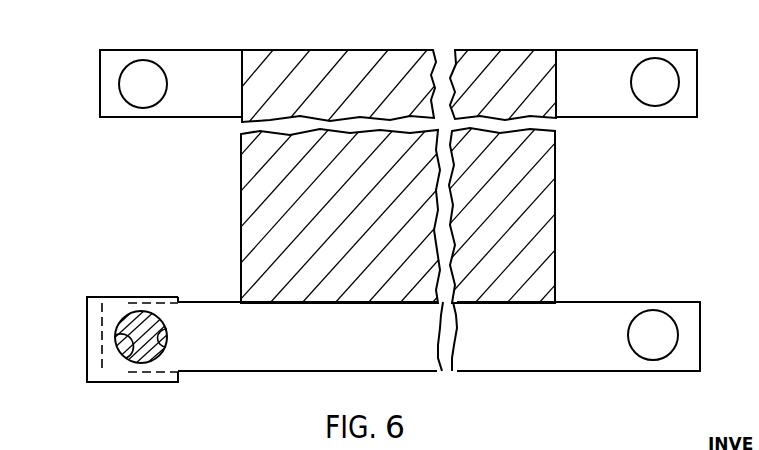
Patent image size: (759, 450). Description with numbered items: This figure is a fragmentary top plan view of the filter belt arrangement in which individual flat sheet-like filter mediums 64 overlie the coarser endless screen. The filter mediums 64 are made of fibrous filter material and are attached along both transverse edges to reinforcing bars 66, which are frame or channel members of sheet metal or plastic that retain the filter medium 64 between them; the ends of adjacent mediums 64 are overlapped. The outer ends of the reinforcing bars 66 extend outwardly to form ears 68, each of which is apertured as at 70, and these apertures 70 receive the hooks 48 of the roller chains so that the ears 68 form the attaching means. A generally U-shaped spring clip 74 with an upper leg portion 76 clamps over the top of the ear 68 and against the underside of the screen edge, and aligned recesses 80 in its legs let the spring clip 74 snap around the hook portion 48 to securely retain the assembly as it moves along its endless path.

The hook 48 is at (135, 318).
The filter medium 64 is at (397, 67).
The reinforcing bar 66 is at (436, 362).
The ear 68 is at (208, 70).
The aperture 70 is at (147, 61).
The spring clip 74 is at (85, 336).
The upper leg portion 76 is at (108, 312).
The recess 80 is at (135, 354).